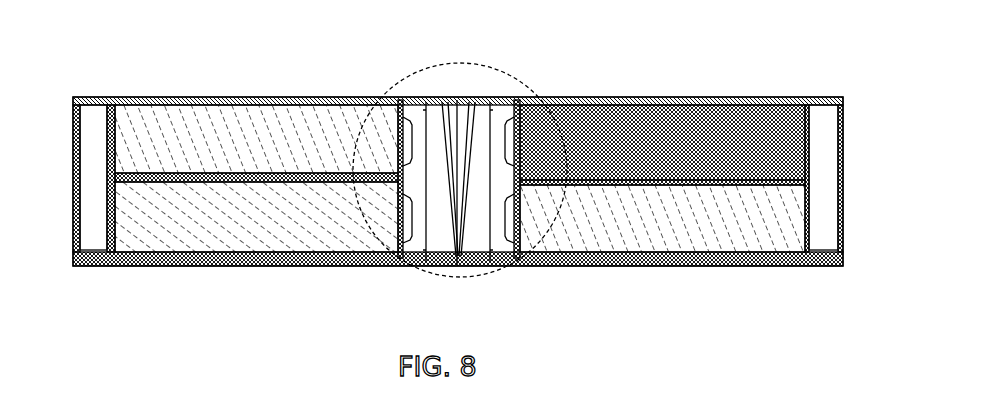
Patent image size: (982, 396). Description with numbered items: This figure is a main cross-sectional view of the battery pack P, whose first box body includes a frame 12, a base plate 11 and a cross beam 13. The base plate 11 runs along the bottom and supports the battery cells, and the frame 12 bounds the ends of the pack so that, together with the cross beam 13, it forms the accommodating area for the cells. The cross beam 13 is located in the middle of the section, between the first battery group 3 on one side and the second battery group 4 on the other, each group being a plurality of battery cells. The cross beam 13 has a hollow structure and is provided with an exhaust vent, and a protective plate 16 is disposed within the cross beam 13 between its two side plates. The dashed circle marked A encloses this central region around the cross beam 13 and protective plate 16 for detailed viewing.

The first battery group 3 is at (147, 157).
The second battery group 4 is at (787, 208).
The base plate 11 is at (712, 268).
The frame 12 is at (825, 138).
The cross beam 13 is at (503, 102).
The protective plate 16 is at (468, 103).
The detail region A is at (402, 83).
The battery pack P is at (633, 45).